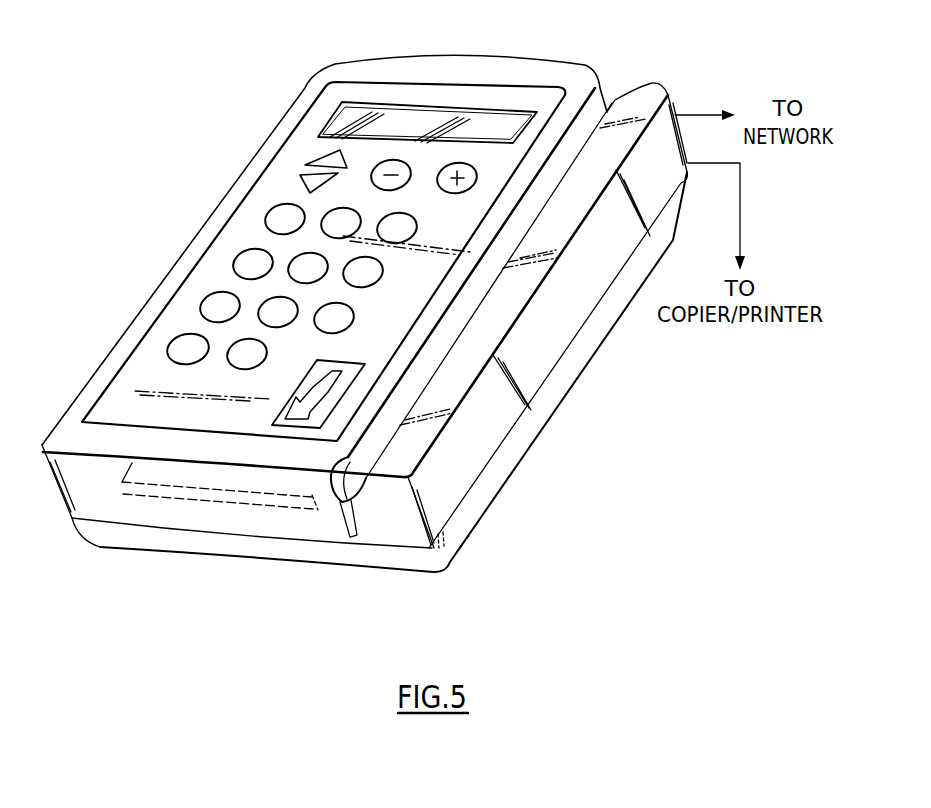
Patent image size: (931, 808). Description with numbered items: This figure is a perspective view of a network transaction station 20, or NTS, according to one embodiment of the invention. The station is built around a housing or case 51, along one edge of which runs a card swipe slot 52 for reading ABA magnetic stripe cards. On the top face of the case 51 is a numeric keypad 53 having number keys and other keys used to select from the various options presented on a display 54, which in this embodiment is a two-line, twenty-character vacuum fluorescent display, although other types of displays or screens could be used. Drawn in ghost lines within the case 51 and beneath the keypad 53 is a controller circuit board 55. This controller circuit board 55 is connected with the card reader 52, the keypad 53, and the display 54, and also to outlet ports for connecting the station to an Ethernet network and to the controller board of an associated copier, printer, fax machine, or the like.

The network transaction station 20 is at (252, 141).
The housing 51 is at (92, 485).
The card swipe slot 52 is at (493, 298).
The numeric keypad 53 is at (205, 287).
The display 54 is at (495, 122).
The controller circuit board 55 is at (207, 500).